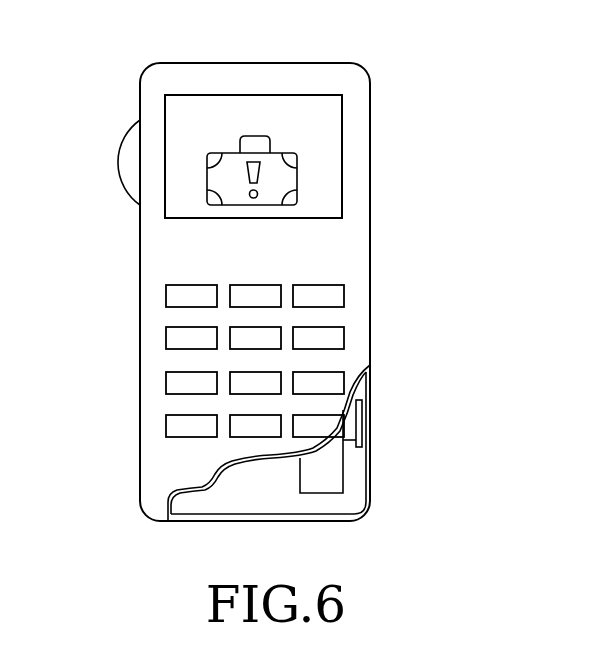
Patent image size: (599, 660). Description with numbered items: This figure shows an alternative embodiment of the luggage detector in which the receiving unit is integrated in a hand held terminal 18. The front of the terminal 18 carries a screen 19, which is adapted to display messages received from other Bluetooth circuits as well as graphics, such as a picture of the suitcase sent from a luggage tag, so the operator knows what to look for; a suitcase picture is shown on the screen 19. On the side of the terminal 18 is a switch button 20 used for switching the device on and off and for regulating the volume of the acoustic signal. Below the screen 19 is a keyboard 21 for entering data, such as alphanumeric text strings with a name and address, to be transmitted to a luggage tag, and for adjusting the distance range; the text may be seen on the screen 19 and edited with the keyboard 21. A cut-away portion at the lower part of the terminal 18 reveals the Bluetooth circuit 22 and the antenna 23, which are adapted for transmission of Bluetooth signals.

The hand held terminal 18 is at (358, 115).
The screen 19 is at (257, 107).
The switch button 20 is at (127, 158).
The keyboard 21 is at (332, 317).
The Bluetooth circuit 22 is at (328, 473).
The antenna 23 is at (352, 422).